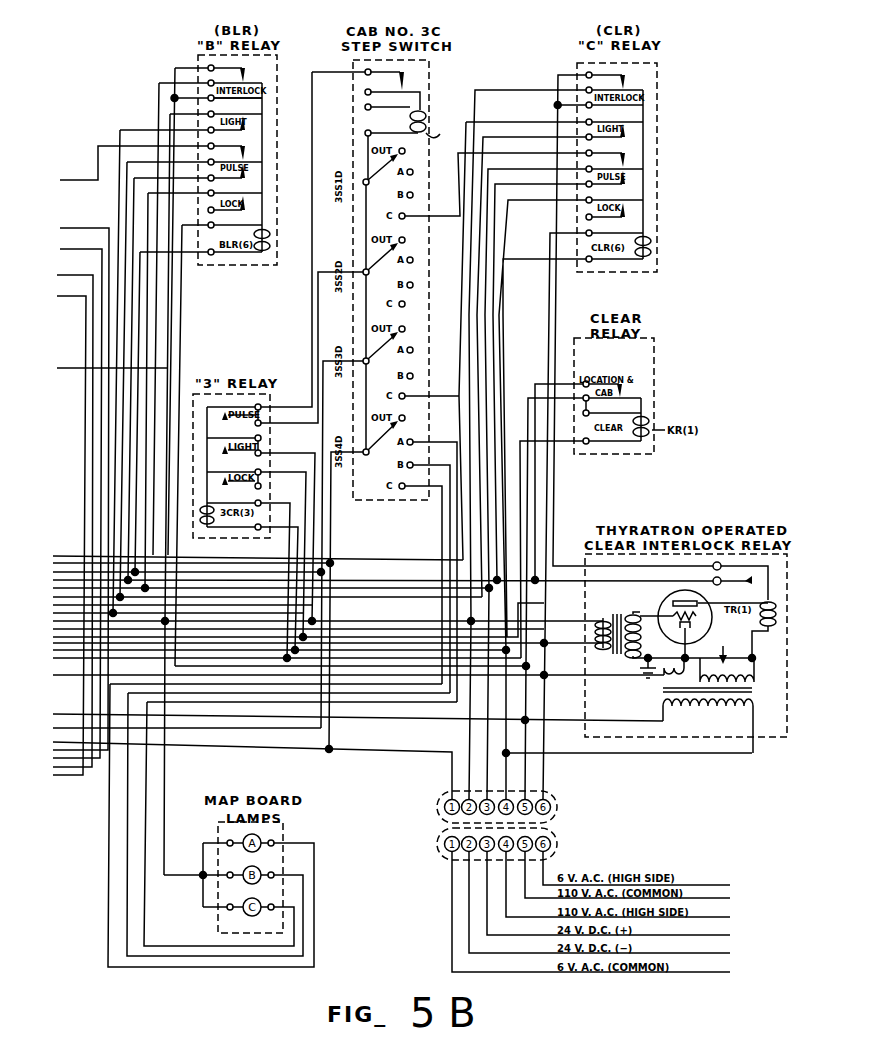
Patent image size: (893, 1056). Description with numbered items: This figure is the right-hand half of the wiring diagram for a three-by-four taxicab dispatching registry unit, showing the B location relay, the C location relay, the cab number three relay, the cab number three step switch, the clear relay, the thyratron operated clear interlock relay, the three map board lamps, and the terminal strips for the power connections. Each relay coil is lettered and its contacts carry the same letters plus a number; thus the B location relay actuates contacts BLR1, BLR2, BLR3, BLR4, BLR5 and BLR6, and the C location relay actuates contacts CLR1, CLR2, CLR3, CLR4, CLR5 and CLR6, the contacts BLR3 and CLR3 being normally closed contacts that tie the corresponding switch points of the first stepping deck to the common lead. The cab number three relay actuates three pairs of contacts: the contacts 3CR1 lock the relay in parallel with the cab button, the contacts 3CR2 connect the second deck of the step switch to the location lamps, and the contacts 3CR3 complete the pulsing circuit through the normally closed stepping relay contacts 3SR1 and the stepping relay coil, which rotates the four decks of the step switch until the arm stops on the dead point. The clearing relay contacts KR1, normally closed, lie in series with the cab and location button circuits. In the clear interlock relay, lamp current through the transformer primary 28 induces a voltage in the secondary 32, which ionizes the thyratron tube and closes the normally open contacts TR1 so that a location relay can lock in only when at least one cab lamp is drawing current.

The transformer secondary 32 is at (754, 672).
The transformer primary 28 is at (753, 706).
The thyratron relay contacts TR1 is at (756, 580).
The clearing relay contacts KR1 is at (648, 393).
The B location relay contacts BLR5 is at (248, 74).
The B location relay contacts BLR6 is at (252, 96).
The B location relay contacts BLR4 is at (248, 125).
The B location relay contacts BLR3 is at (248, 154).
The B location relay contacts BLR2 is at (248, 173).
The B location relay contacts BLR1 is at (248, 206).
The C location relay contacts CLR5 is at (628, 82).
The C location relay contacts CLR6 is at (633, 102).
The C location relay contacts CLR4 is at (628, 130).
The C location relay contacts CLR3 is at (628, 160).
The C location relay contacts CLR2 is at (628, 180).
The C location relay contacts CLR1 is at (628, 212).
The stepping relay contacts 3SR1 is at (381, 125).
The cab relay contacts 3CR3 is at (232, 407).
The cab relay contacts 3CR2 is at (232, 440).
The cab relay contacts 3CR1 is at (232, 471).